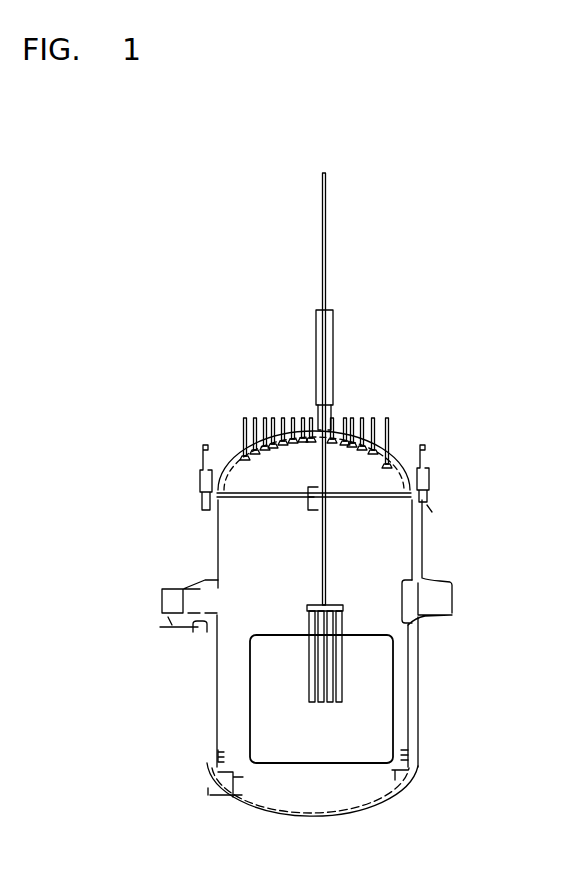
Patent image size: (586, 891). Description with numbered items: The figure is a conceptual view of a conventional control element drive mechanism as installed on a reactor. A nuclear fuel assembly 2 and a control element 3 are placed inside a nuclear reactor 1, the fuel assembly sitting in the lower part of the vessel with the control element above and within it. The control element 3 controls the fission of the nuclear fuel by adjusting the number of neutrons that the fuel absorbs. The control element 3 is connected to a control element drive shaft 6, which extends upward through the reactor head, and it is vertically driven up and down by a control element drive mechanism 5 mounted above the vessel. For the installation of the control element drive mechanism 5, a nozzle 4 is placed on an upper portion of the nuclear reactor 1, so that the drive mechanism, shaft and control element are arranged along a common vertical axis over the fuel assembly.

The nuclear reactor 1 is at (415, 540).
The nuclear fuel assembly 2 is at (393, 683).
The control element 3 is at (337, 623).
The nozzle 4 is at (372, 418).
The control element drive mechanism 5 is at (333, 343).
The control element drive shaft 6 is at (325, 470).